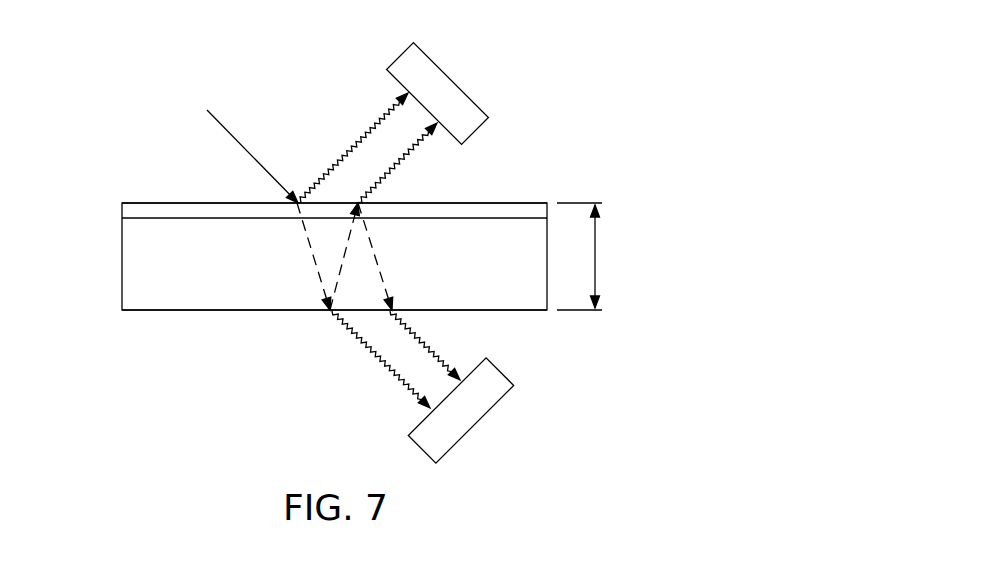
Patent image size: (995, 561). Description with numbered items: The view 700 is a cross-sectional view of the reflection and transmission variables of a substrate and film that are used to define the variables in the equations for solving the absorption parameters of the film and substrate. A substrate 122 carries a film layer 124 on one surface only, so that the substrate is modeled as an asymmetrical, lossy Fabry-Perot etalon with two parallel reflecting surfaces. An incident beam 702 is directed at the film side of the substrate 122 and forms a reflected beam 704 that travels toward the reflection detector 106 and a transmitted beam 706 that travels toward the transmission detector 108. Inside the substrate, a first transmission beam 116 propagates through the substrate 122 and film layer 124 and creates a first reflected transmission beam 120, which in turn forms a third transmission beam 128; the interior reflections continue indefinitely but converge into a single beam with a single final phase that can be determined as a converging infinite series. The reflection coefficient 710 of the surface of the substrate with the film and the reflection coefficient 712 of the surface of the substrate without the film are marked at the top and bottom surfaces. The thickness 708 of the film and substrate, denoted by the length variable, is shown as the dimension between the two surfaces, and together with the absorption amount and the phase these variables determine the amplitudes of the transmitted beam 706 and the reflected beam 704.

The view 700 is at (617, 48).
The reflection detector 106 is at (457, 80).
The transmission detector 108 is at (497, 372).
The first transmission beam 116 is at (318, 262).
The first reflected transmission beam 120 is at (345, 257).
The substrate 122 is at (182, 290).
The film layer 124 is at (122, 217).
The third transmission beam 128 is at (382, 278).
The incident beam 702 is at (245, 152).
The reflected beam 704 is at (342, 158).
The transmitted beam 706 is at (375, 358).
The thickness of the film and substrate 708 is at (597, 278).
The reflection coefficient of the surface of the substrate with the film 710 is at (117, 133).
The reflection coefficient of the surface of the substrate without the film 712 is at (130, 372).